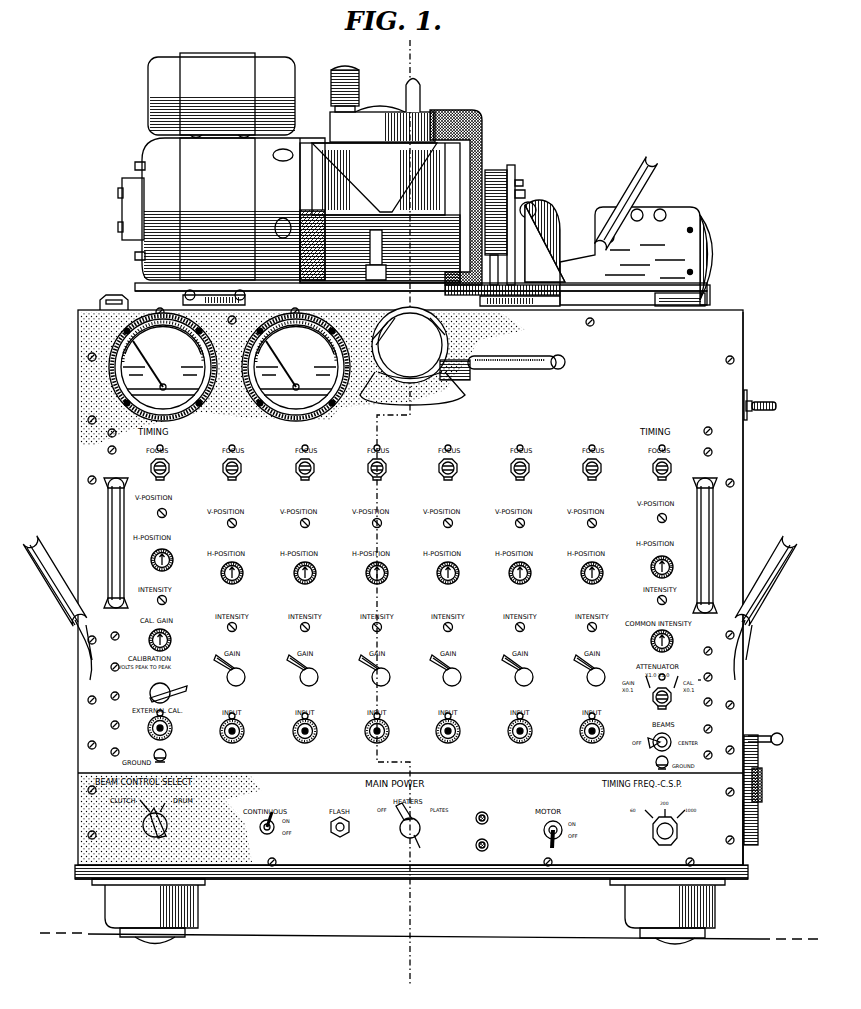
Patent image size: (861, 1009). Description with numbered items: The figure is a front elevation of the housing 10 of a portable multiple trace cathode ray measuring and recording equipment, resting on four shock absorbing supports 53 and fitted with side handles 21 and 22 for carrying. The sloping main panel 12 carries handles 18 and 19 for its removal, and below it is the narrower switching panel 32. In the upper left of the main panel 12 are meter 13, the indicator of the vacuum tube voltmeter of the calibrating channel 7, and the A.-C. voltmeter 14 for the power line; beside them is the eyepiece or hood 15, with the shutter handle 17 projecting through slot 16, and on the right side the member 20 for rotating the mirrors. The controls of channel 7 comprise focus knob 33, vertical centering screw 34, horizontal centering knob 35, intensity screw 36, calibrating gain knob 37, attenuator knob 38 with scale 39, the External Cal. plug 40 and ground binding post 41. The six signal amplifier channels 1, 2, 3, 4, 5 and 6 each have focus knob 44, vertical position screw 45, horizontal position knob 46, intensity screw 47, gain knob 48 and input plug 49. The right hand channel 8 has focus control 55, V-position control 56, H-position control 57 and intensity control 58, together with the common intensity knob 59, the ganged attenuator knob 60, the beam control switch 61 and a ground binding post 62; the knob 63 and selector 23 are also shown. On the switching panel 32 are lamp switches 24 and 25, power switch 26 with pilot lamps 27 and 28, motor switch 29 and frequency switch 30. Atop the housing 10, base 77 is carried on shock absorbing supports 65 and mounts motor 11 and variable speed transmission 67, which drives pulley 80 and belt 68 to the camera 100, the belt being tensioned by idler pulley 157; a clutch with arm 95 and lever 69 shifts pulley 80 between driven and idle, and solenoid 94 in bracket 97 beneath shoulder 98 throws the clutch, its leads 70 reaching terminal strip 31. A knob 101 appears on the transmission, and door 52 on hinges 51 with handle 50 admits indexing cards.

The amplifier channel 1 is at (232, 597).
The amplifier channel 2 is at (304, 597).
The amplifier channel 3 is at (404, 50).
The amplifier channel 4 is at (447, 597).
The amplifier channel 5 is at (519, 597).
The amplifier channel 6 is at (591, 597).
The channel 7 is at (136, 609).
The right hand channel 8 is at (684, 610).
The cabinet or housing 10 is at (76, 303).
The motor 11 is at (146, 152).
The main panel 12 is at (725, 342).
The meter 13 is at (108, 367).
The A.-C. voltmeter 14 is at (281, 400).
The eyepiece or hood 15 is at (430, 385).
The slot 16 is at (512, 371).
The handle 17 is at (566, 362).
The handle 18 is at (108, 512).
The handle 19 is at (715, 517).
The member 20 is at (770, 402).
The handle 21 is at (25, 535).
The handle 22 is at (792, 535).
The beam control selector switch 23 is at (170, 835).
The double pole, double throw switch 24 is at (259, 827).
The push button switch 25 is at (331, 827).
The switch 26 is at (401, 827).
The pilot lamp 27 is at (484, 812).
The pilot lamp 28 is at (476, 846).
The switch 29 is at (544, 830).
The switch 30 is at (678, 831).
The terminal strip 31 is at (104, 296).
The switching panel 32 is at (732, 820).
The knob 33 is at (150, 466).
The shaft or set screw 34 is at (167, 513).
The knob 35 is at (150, 555).
The shaft or set screw 36 is at (167, 601).
The knob 37 is at (150, 634).
The knob 38 is at (183, 678).
The scale 39 is at (135, 688).
The connector plug 40 is at (148, 731).
The binding post 41 is at (167, 758).
The knob 44 is at (294, 469).
The shaft or set screw 45 is at (300, 525).
The knob 46 is at (293, 573).
The shaft or set-screw 47 is at (300, 627).
The knob 48 is at (294, 675).
The plug 49 is at (292, 732).
The handle 50 is at (778, 735).
The hinges 51 is at (763, 786).
The door 52 is at (758, 760).
The shock absorbing supports 53 is at (118, 905).
The focus control 55 is at (673, 469).
The V-position control 56 is at (657, 519).
The H-position control 57 is at (672, 573).
The intensity control 58 is at (657, 614).
The knob 59 is at (673, 640).
The control knob 60 is at (652, 702).
The beam control switch 61 is at (672, 738).
The binding post 62 is at (655, 760).
The attenuator scale 63 is at (698, 682).
The shock absorbing supports 65 is at (245, 302).
The variable speed transmission 67 is at (412, 110).
The belt 68 is at (498, 170).
The operating lever 69 is at (648, 165).
The leads 70 is at (722, 248).
The base 77 is at (140, 285).
The pulley 80 is at (513, 172).
The solenoid 94 is at (678, 310).
The clutch arm 95 is at (548, 213).
The bracket 97 is at (715, 285).
The shoulder 98 is at (680, 208).
The camera 100 is at (478, 112).
The knob 101 is at (414, 85).
The spring tensioned idler pulley 157 is at (530, 183).